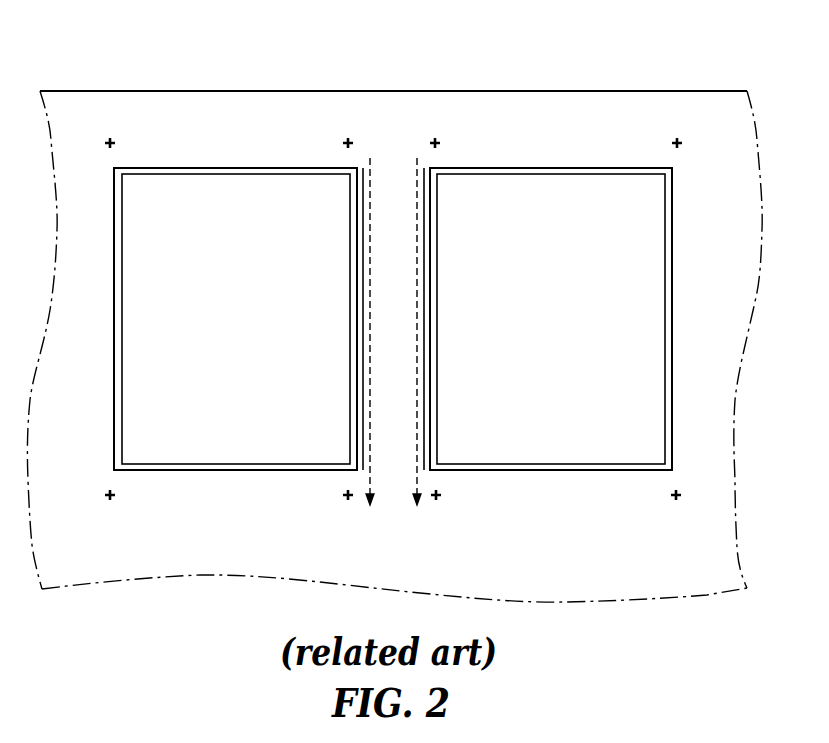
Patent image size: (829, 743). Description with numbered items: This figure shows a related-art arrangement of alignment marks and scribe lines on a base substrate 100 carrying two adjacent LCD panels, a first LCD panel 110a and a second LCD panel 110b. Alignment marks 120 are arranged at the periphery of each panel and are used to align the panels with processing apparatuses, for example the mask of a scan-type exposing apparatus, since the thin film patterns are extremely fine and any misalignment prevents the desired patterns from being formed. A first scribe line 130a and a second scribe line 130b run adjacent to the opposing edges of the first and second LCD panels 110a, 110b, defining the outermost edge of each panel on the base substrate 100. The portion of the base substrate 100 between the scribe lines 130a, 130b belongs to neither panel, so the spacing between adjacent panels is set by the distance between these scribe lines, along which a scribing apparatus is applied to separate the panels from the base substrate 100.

The base substrate 100 is at (588, 91).
The first LCD panel 110a is at (235, 168).
The second LCD panel 110b is at (653, 168).
The alignment marks 120 is at (348, 138).
The first scribe line 130a is at (362, 197).
The second scribe line 130b is at (425, 197).